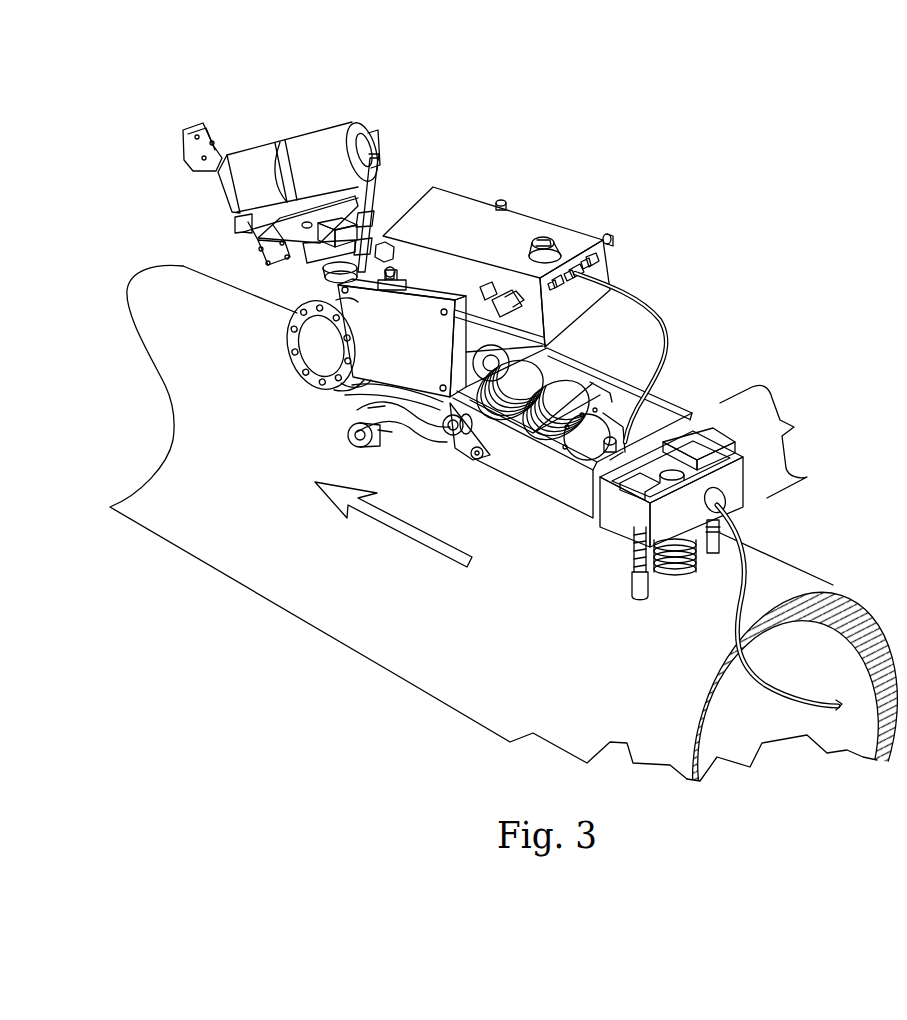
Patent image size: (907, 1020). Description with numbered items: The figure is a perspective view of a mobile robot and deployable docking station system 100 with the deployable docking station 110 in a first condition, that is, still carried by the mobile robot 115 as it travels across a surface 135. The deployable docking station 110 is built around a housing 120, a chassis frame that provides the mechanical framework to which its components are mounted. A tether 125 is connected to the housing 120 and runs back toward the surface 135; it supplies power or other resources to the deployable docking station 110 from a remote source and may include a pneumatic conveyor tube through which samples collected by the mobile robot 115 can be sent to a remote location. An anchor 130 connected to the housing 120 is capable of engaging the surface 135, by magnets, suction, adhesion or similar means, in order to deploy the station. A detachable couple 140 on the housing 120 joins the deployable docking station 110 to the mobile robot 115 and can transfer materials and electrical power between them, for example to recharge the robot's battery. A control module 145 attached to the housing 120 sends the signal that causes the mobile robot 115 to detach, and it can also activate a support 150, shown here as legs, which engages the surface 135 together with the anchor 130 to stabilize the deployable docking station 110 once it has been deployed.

The mobile robot and deployable docking station system 100 is at (599, 130).
The deployable docking station 110 is at (475, 522).
The mobile robot 115 is at (455, 186).
The housing 120 is at (622, 540).
The tether 125 is at (806, 690).
The anchor 130 is at (679, 573).
The surface 135 is at (798, 575).
The detachable couple 140 is at (645, 487).
The control module 145 is at (705, 440).
The support 150 is at (649, 617).